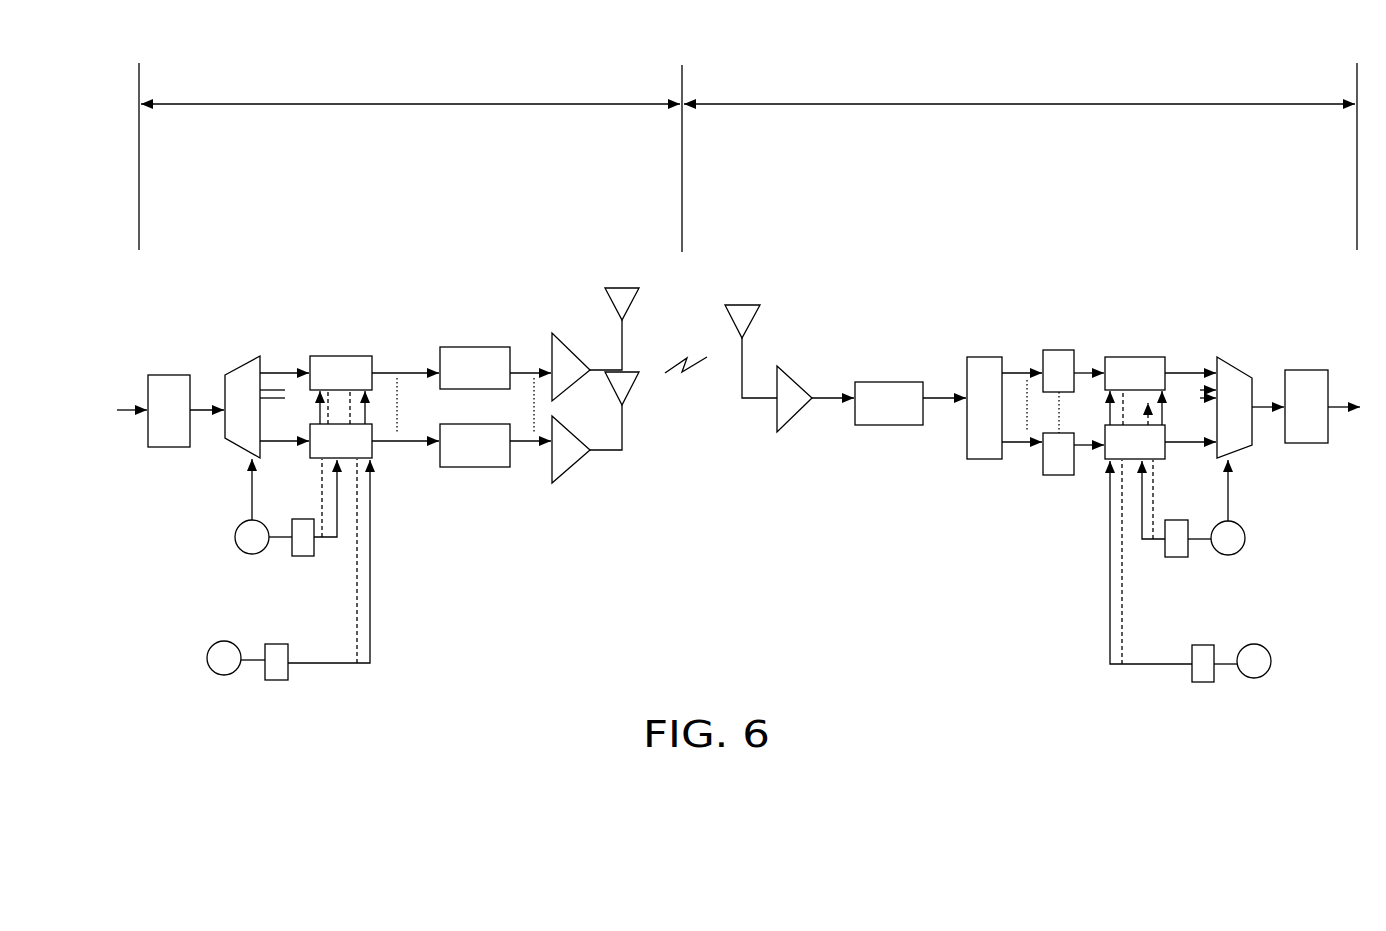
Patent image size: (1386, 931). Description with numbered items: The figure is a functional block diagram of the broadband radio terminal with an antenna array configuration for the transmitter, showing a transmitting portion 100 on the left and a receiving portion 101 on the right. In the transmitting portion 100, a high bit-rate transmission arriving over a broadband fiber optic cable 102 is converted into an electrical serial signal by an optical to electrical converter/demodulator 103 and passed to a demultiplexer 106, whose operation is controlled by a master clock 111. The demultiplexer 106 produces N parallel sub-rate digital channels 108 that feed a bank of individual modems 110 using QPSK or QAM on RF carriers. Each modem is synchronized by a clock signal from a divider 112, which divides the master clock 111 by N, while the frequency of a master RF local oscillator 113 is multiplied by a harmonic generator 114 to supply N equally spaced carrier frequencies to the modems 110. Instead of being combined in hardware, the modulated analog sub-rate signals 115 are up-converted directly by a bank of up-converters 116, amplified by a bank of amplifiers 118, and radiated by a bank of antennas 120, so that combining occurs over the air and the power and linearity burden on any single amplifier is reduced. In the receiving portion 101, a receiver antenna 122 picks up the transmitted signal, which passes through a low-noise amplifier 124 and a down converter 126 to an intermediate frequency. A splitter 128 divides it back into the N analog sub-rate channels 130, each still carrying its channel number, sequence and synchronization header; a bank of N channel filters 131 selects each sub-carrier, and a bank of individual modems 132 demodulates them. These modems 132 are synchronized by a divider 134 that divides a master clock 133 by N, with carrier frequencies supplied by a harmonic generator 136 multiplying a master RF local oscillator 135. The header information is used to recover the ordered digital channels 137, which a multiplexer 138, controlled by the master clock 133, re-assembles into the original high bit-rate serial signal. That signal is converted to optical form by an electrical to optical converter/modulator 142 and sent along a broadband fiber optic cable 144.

The transmitting portion 100 is at (410, 79).
The receiving portion 101 is at (1019, 79).
The broadband fiber optic cable 102 is at (138, 412).
The optical to electrical converter/demodulator 103 is at (170, 448).
The demultiplexer 106 is at (242, 365).
The parallel sub-rate digital channels 108 is at (287, 365).
The bank of individual modems 110 is at (365, 356).
The master clock 111 is at (238, 555).
The divider 112 is at (297, 558).
The master RF local oscillator 113 is at (228, 675).
The harmonic generator 114 is at (285, 682).
The modulated signal lines 115 is at (410, 372).
The bank of up-converters 116 is at (483, 347).
The bank of amplifiers 118 is at (568, 345).
The bank of antennas 120 is at (618, 287).
The receiver antenna 122 is at (738, 305).
The low-noise amplifier 124 is at (787, 423).
The down converter 126 is at (882, 382).
The splitter 128 is at (977, 460).
The analog sub-rate channels 130 is at (1018, 373).
The bank of N channel filters 131 is at (1058, 350).
The bank of individual modems 132 is at (1110, 357).
The master clock 133 is at (1218, 554).
The divider 134 is at (1168, 557).
The master RF local oscillator 135 is at (1254, 677).
The harmonic generator 136 is at (1202, 682).
The multiplexer 137 is at (1197, 373).
The multiplexer 138 is at (1230, 357).
The electrical to optical converter/modulator 142 is at (1308, 445).
The broadband fiber optic cable 144 is at (1347, 405).